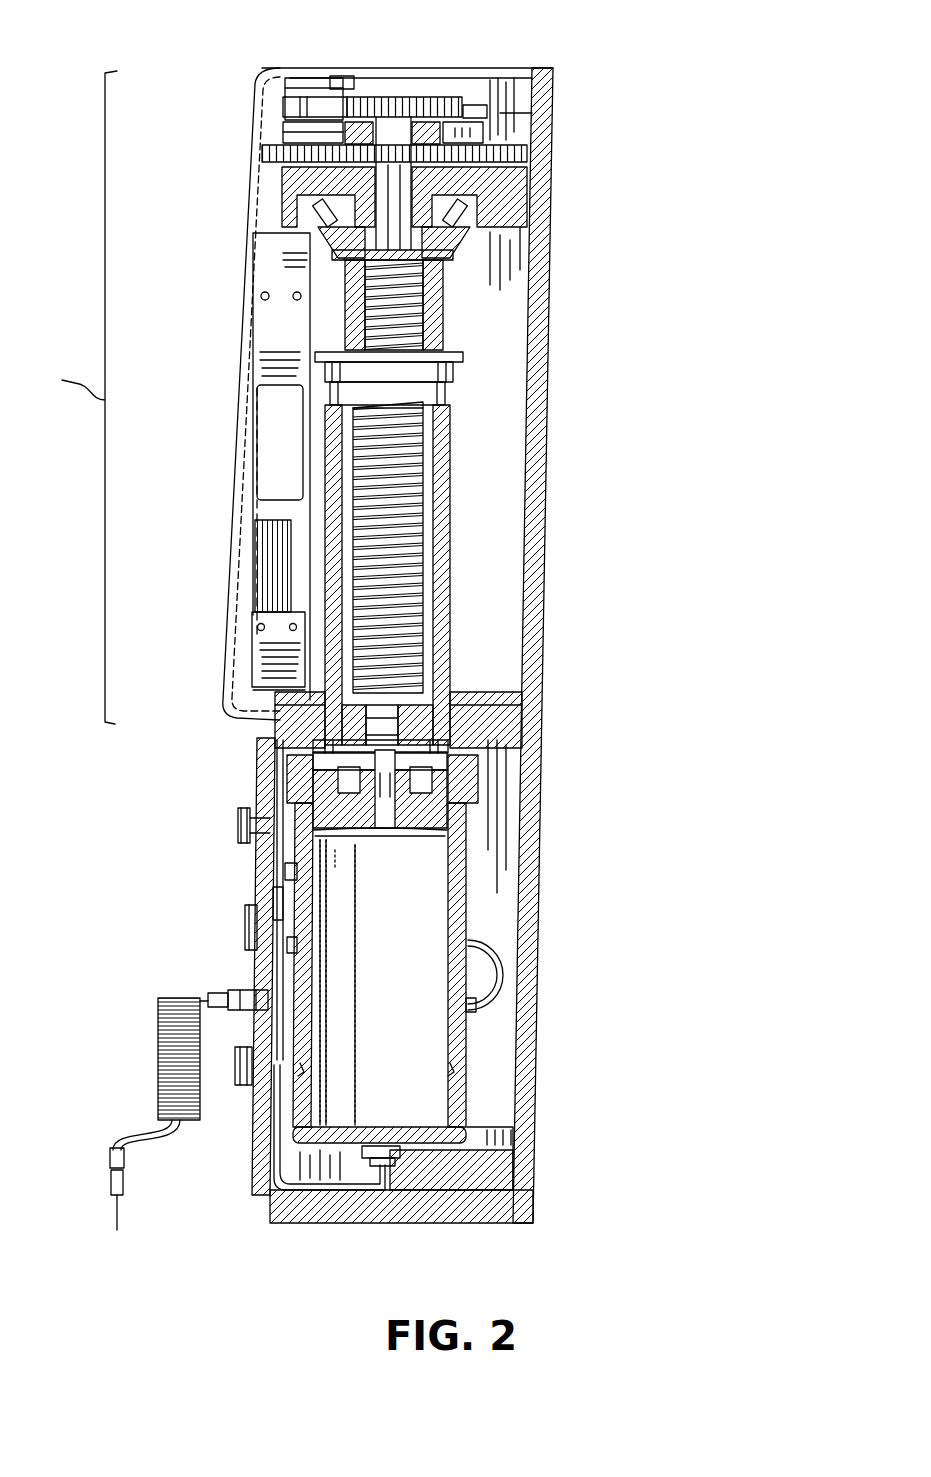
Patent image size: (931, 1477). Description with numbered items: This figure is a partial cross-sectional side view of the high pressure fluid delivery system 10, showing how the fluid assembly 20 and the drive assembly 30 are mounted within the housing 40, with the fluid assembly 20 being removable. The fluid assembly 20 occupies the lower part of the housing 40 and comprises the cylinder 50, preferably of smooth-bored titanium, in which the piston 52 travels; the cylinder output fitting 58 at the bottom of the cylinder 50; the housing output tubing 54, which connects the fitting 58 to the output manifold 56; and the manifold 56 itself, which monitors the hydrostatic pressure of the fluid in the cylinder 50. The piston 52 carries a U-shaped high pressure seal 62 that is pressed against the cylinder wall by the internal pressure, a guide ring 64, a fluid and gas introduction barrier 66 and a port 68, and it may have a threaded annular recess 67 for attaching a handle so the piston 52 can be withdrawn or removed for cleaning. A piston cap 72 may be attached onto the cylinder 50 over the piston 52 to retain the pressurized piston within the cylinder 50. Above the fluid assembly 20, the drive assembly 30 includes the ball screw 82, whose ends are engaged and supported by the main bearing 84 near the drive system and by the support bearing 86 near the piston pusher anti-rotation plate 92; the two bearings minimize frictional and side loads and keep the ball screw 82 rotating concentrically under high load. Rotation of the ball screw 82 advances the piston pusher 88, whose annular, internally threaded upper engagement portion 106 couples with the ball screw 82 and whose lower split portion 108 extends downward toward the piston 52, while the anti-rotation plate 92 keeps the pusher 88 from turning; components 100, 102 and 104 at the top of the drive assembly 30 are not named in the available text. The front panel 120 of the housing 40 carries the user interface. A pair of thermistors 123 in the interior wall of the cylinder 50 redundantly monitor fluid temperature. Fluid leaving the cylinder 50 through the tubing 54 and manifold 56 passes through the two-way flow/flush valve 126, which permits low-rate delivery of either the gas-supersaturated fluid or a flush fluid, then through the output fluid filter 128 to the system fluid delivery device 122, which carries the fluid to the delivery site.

The high pressure fluid delivery system 10 is at (585, 106).
The fluid assembly 20 is at (535, 872).
The drive assembly 30 is at (177, 397).
The housing 40 is at (555, 520).
The cylinder 50 is at (470, 912).
The piston 52 is at (400, 826).
The housing output tubing 54 is at (303, 1225).
The output manifold 56 is at (232, 933).
The cylinder output fitting 58 is at (388, 1163).
The high pressure seal 62 is at (238, 810).
The guide ring 64 is at (480, 782).
The fluid and gas introduction barrier 66 is at (370, 830).
The threaded annular recess 67 is at (420, 842).
The port 68 is at (470, 720).
The piston cap 72 is at (420, 801).
The ball screw 82 is at (435, 300).
The main bearing 84 is at (465, 236).
The support bearing 86 is at (498, 702).
The piston pusher 88 is at (458, 432).
The piston pusher anti-rotation plate 92 is at (445, 733).
The gear 100 is at (265, 152).
The drive gear 102 is at (439, 147).
The motor 104 is at (425, 97).
The upper engagement portion 106 is at (465, 370).
The lower split portion 108 is at (450, 565).
The front panel 120 is at (212, 557).
The system fluid delivery device 122 is at (158, 1062).
The thermistors 123 is at (300, 1070).
The two-way flow/flush valve 126 is at (260, 895).
The output fluid filter 128 is at (227, 990).